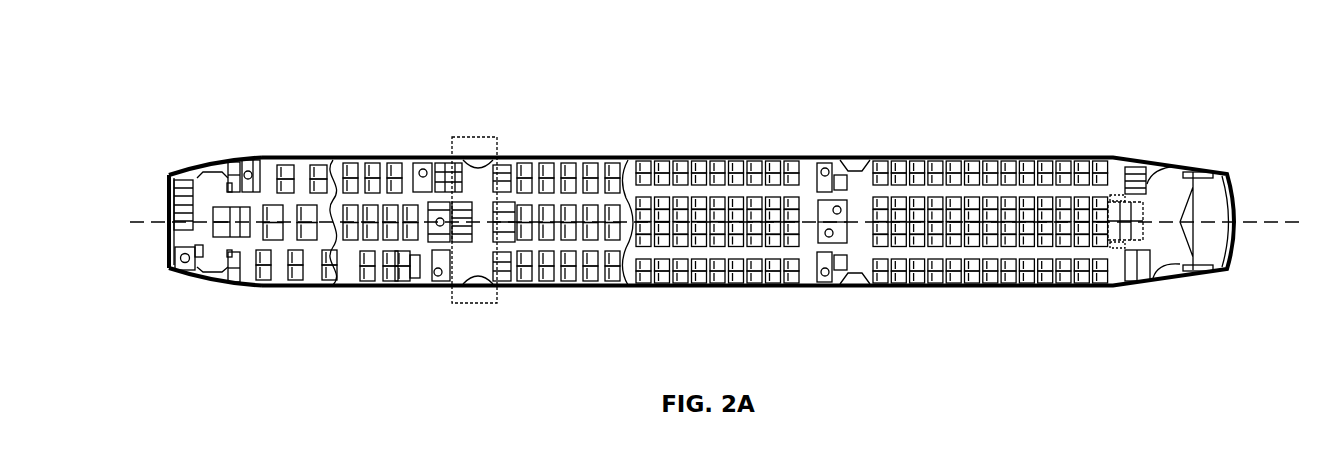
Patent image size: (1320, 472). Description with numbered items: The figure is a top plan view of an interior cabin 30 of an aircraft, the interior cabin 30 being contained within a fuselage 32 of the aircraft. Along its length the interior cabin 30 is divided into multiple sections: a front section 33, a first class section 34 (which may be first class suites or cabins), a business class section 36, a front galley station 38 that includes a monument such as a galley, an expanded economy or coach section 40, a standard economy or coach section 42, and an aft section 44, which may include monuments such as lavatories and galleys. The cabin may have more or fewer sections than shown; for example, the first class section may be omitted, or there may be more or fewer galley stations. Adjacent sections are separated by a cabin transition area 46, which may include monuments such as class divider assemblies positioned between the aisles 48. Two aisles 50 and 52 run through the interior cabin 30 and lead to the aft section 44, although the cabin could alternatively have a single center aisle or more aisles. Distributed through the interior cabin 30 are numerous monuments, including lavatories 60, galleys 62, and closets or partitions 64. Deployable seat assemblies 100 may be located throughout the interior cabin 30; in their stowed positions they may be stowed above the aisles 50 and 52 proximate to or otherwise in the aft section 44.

The interior cabin 30 is at (290, 75).
The fuselage 32 is at (582, 92).
The front section 33 is at (216, 289).
The first class section 34 is at (303, 287).
The business class section 36 is at (367, 158).
The front galley station 38 is at (472, 298).
The expanded economy or coach section 40 is at (560, 285).
The standard economy or coach section 42 is at (675, 158).
The aft section 44 is at (1175, 168).
The cabin transition area 46 is at (231, 158).
The aisles 48 is at (427, 158).
The aisle 50 is at (982, 168).
The aisle 52 is at (1003, 268).
The lavatories 60 is at (253, 158).
The galleys 62 is at (220, 207).
The closets or partitions 64 is at (240, 278).
The deployable seat assemblies 100 is at (1110, 168).